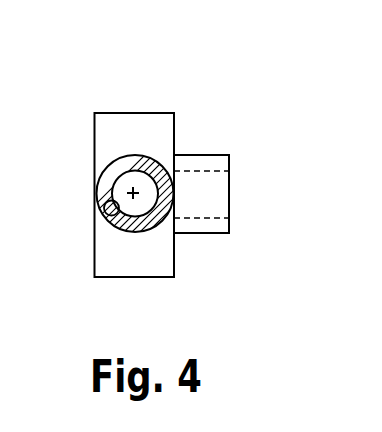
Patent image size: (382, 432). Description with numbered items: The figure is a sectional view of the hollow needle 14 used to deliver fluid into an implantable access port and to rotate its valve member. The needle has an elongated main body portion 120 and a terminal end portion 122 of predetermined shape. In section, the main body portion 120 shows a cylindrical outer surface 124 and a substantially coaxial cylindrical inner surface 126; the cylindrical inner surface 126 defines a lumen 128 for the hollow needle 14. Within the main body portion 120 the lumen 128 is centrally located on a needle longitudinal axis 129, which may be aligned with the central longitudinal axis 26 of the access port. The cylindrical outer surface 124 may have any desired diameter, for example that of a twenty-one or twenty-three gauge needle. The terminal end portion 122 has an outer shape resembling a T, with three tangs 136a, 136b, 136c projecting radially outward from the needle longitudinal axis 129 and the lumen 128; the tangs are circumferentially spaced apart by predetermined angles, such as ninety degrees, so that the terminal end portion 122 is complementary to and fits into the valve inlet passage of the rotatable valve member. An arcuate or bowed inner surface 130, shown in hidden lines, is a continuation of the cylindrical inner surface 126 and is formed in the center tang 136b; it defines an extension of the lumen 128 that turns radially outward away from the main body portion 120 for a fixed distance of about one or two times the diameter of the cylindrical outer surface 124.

The hollow needle 14 is at (229, 69).
The main body portion 120 is at (123, 181).
The terminal end portion 122 is at (174, 137).
The cylindrical outer surface 124 is at (110, 229).
The cylindrical inner surface 126 is at (104, 208).
The lumen 128 is at (125, 179).
The inner surface 130 is at (202, 171).
The tang 136a is at (143, 113).
The center tang 136b is at (229, 225).
The tang 136c is at (122, 277).
The central longitudinal axis 26 is at (133, 195).
The needle longitudinal axis 129 is at (133, 193).